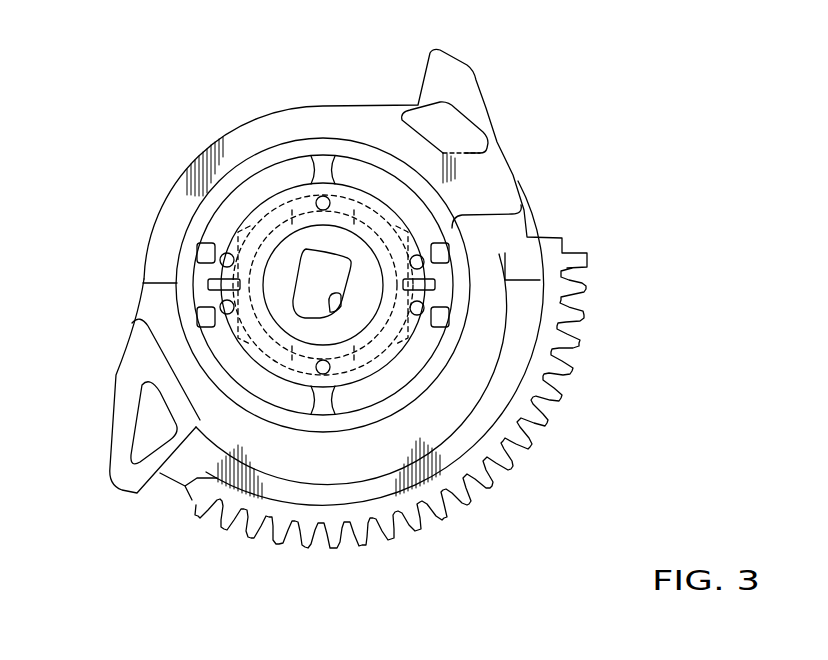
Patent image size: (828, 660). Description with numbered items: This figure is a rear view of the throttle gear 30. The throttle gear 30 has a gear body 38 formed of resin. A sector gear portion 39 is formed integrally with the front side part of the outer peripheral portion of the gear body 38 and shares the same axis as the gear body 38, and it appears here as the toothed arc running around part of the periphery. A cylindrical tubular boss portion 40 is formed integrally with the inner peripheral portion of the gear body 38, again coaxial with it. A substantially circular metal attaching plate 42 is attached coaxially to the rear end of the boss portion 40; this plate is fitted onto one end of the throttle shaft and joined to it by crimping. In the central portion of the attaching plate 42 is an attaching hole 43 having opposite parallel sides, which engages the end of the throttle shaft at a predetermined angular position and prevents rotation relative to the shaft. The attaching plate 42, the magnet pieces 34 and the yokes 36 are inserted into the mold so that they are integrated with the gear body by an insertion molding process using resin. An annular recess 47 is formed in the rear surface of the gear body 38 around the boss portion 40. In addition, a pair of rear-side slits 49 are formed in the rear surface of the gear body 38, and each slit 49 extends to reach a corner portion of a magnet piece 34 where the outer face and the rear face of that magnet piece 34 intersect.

The throttle gear 30 is at (163, 113).
The gear body 38 is at (270, 111).
The yoke 36 is at (367, 190).
The boss portion 40 is at (262, 233).
The attaching plate 42 is at (353, 249).
The attaching hole 43 is at (336, 306).
The annular recess 47 is at (445, 271).
The rear-side slit 49 is at (212, 283).
The magnet piece 34 is at (248, 290).
The sector gear portion 39 is at (560, 385).